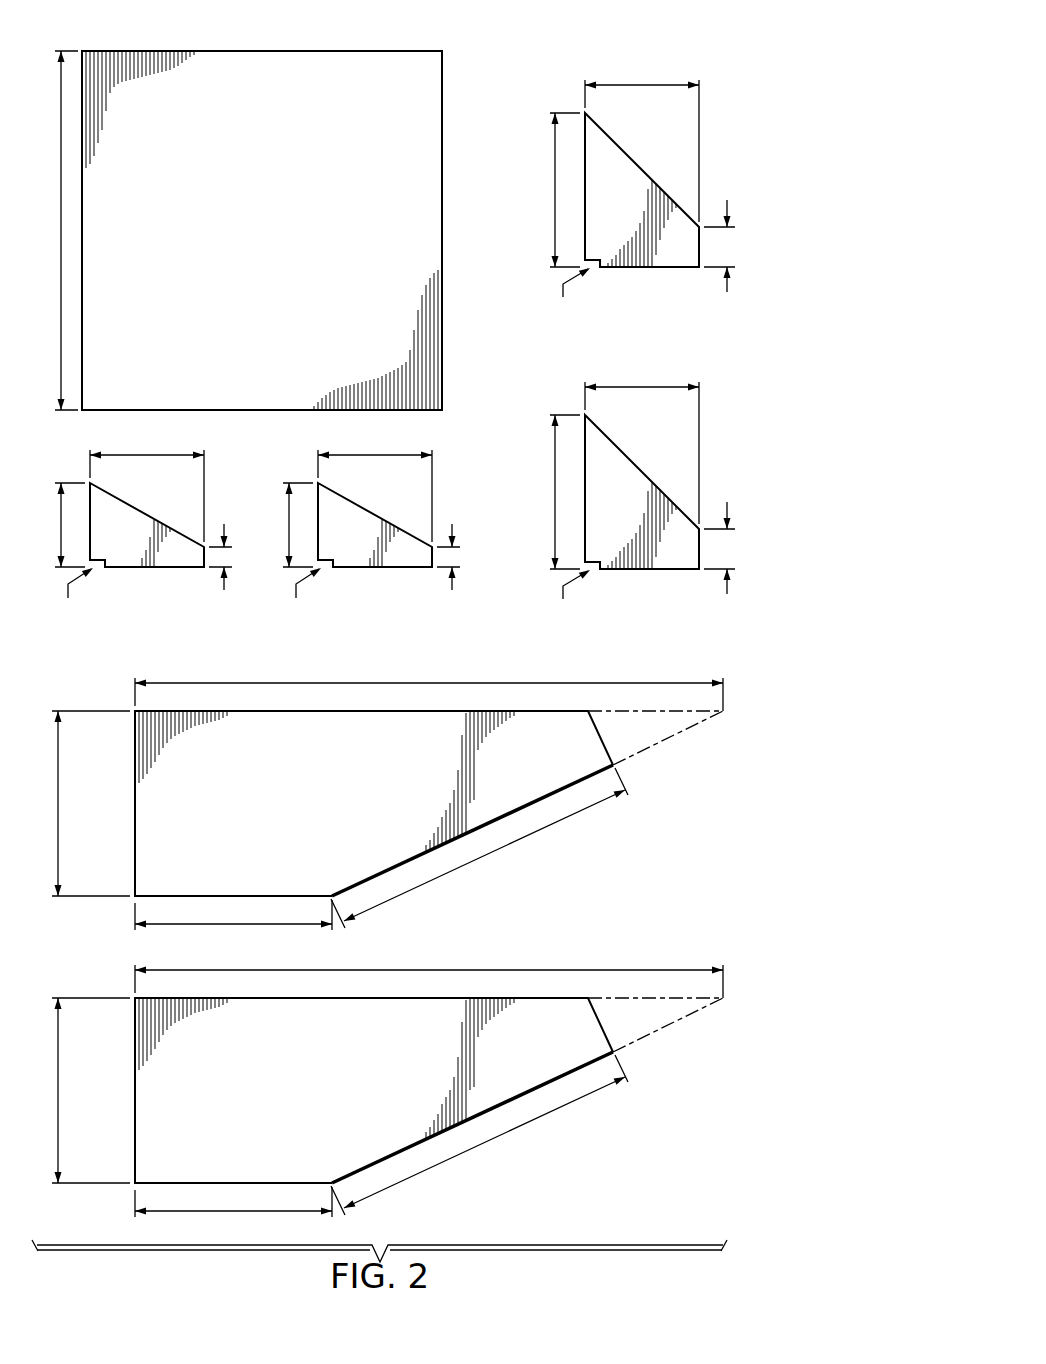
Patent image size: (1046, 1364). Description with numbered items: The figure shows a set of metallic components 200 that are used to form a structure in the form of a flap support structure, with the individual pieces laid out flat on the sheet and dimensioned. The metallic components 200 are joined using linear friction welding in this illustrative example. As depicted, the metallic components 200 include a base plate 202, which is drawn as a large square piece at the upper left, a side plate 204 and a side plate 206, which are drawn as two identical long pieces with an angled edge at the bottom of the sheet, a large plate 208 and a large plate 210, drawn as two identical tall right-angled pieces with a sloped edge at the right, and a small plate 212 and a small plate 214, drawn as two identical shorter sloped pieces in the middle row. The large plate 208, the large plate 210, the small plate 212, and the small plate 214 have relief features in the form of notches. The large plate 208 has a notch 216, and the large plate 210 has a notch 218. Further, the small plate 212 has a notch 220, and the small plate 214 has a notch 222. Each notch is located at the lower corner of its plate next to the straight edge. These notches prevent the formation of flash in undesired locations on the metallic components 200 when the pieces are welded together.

The metallic components 200 is at (722, 62).
The base plate 202 is at (445, 101).
The side plate 204 is at (135, 802).
The side plate 206 is at (372, 1089).
The large plate 208 is at (642, 170).
The large plate 210 is at (632, 507).
The small plate 212 is at (147, 515).
The small plate 214 is at (363, 541).
The notch 216 is at (597, 270).
The notch 218 is at (621, 593).
The notch 220 is at (107, 569).
The notch 222 is at (354, 592).